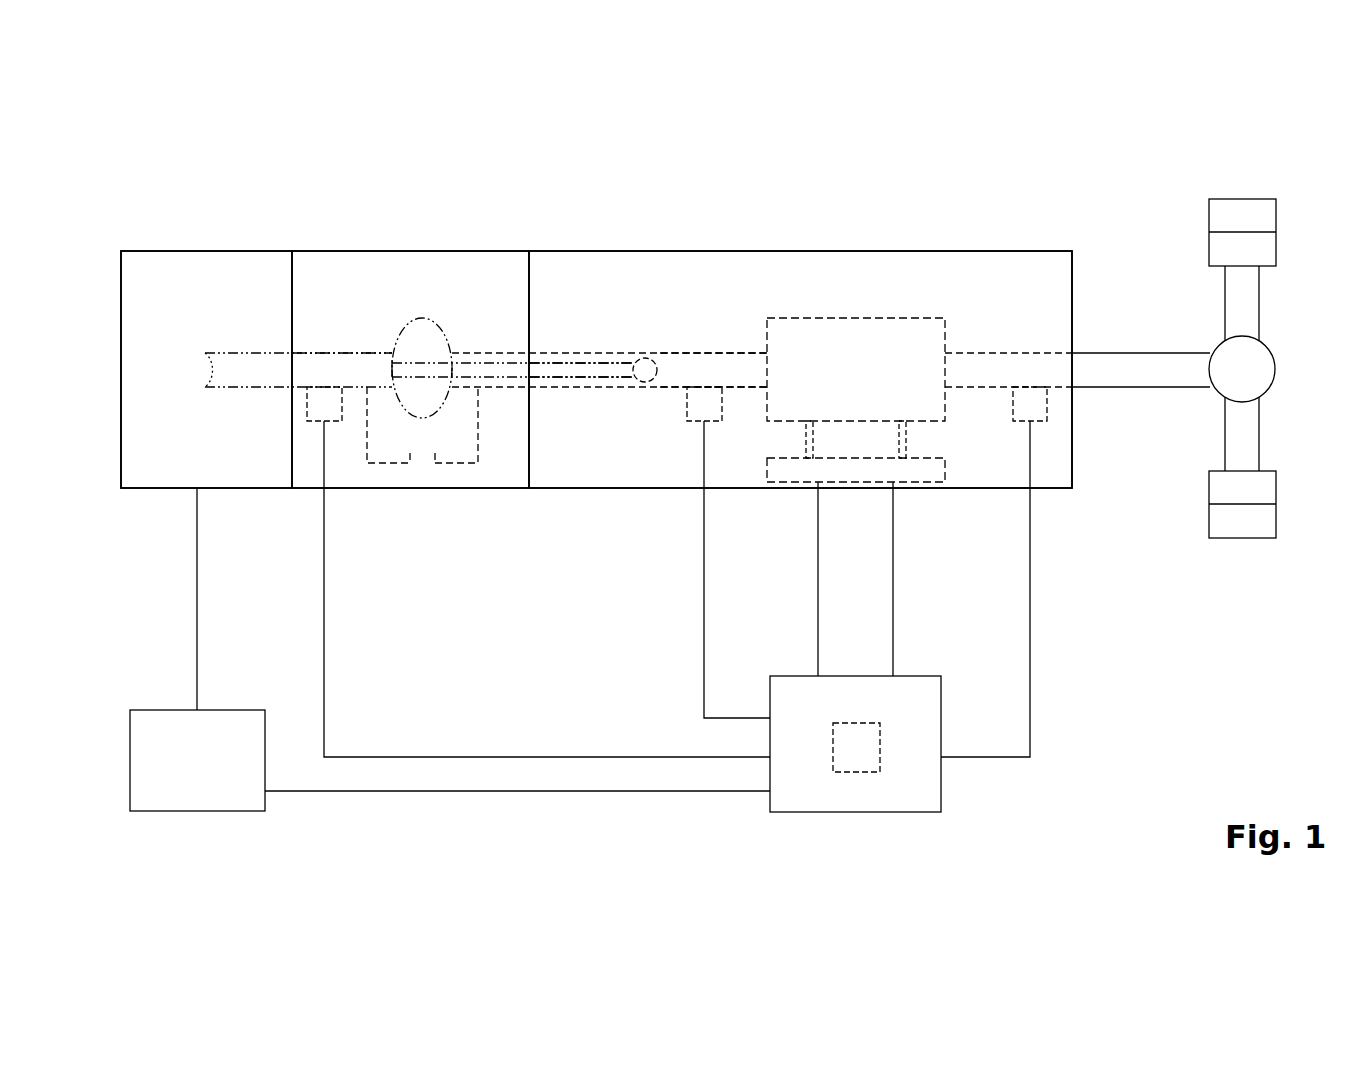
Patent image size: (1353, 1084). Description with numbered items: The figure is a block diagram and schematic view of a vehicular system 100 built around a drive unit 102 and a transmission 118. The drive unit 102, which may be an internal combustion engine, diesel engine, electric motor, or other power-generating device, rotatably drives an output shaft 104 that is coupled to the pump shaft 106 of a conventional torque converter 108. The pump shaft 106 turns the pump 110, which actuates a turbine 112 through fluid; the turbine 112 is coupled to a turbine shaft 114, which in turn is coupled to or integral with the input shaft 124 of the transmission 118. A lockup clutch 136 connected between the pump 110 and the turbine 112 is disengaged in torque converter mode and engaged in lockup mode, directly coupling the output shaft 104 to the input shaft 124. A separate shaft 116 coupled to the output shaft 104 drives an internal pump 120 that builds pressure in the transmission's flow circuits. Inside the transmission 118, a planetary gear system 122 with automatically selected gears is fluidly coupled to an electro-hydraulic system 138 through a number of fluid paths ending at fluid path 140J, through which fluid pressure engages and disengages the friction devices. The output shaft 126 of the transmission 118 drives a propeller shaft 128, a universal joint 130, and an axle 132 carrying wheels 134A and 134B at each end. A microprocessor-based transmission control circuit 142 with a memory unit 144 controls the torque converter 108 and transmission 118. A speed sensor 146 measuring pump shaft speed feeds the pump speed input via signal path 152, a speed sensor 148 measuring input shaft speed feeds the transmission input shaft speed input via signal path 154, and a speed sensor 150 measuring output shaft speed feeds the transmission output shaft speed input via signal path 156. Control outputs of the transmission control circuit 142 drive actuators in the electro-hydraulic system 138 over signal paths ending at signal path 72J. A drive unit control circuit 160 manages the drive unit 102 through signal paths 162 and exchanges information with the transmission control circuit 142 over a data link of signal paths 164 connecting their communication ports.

The vehicular system 100 is at (158, 178).
The drive unit 102 is at (233, 251).
The output shaft 104 is at (243, 350).
The pump shaft 106 is at (333, 352).
The torque converter 108 is at (418, 251).
The pump 110 is at (400, 325).
The turbine 112 is at (440, 325).
The turbine shaft 114 is at (493, 352).
The shaft 116 is at (548, 378).
The transmission 118 is at (800, 251).
The internal pump 120 is at (640, 357).
The planetary gear system 122 is at (883, 381).
The input shaft 124 is at (717, 352).
The output shaft 126 is at (1008, 352).
The propeller shaft 128 is at (1140, 352).
The universal joint 130 is at (1265, 390).
The axle 132 is at (1260, 308).
The wheel 134A is at (1243, 199).
The wheel 134B is at (1243, 538).
The lockup clutch 136 is at (435, 464).
The electro-hydraulic system 138 is at (912, 470).
The fluid path 140J is at (906, 436).
The transmission control circuit 142 is at (828, 812).
The memory unit 144 is at (865, 772).
The speed sensor 146 is at (307, 400).
The speed sensor 148 is at (690, 400).
The speed sensor 150 is at (1047, 400).
The signal path 152 is at (480, 757).
The signal path 154 is at (704, 606).
The signal path 156 is at (1030, 645).
The drive unit control circuit 160 is at (190, 812).
The signal paths 162 is at (197, 537).
The signal paths 164 is at (433, 791).
The signal path 72J is at (893, 610).